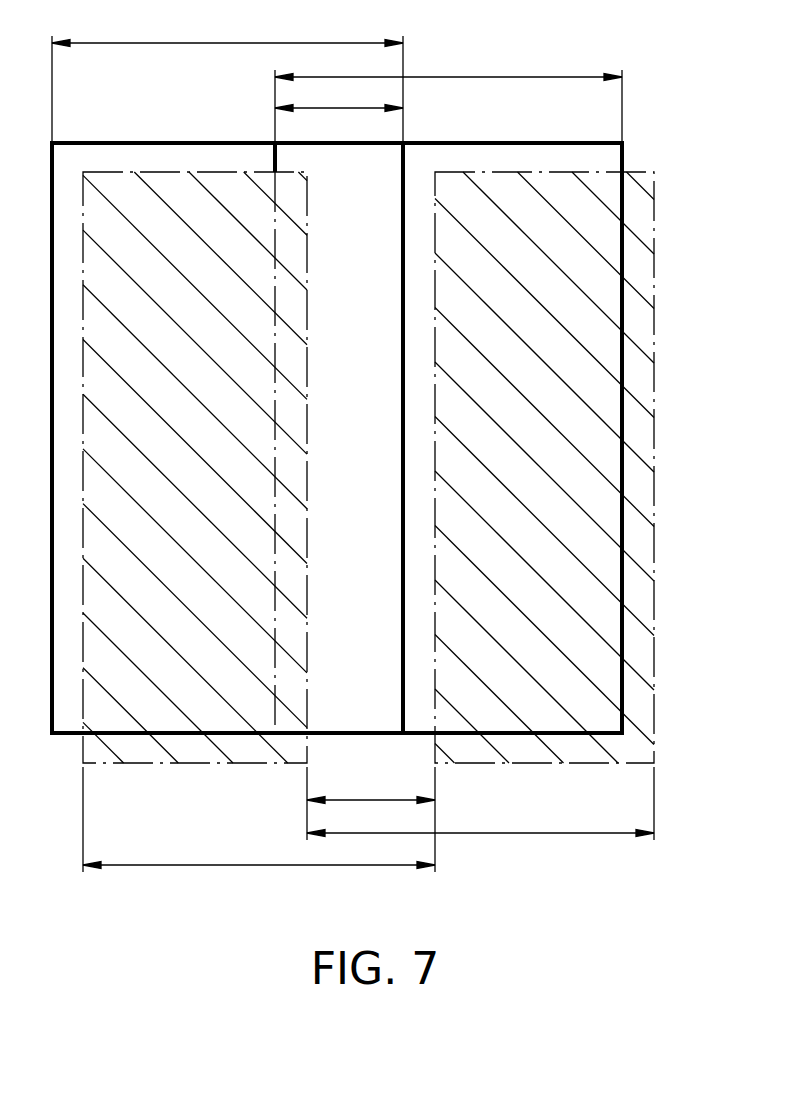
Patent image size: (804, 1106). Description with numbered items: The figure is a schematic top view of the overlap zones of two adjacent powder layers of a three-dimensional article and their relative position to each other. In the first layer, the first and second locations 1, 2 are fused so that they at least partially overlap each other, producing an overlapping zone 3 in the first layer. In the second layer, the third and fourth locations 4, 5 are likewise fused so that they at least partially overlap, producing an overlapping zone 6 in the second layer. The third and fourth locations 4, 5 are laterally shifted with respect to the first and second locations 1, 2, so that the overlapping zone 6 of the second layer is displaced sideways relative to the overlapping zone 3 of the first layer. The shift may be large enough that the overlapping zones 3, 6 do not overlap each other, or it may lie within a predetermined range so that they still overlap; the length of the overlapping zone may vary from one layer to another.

The first selected location 1 is at (204, 43).
The second selected location 2 is at (452, 77).
The overlapping zone in the first layer 3 is at (338, 107).
The third selected location 4 is at (238, 865).
The fourth selected location 5 is at (578, 597).
The overlapping zone in the second layer 6 is at (370, 801).